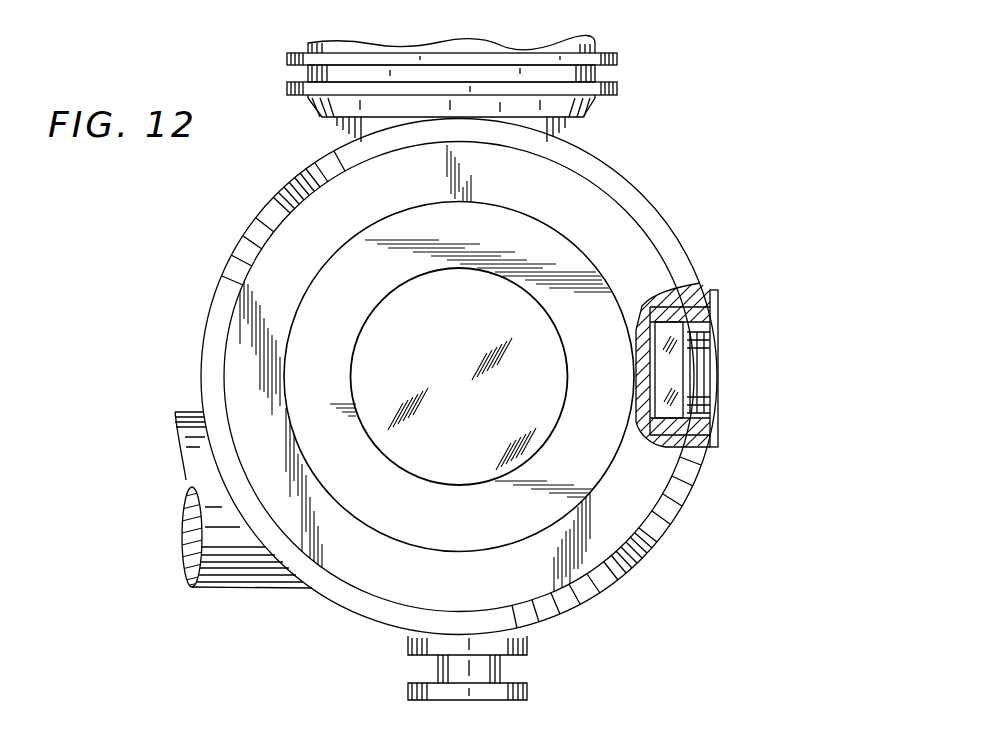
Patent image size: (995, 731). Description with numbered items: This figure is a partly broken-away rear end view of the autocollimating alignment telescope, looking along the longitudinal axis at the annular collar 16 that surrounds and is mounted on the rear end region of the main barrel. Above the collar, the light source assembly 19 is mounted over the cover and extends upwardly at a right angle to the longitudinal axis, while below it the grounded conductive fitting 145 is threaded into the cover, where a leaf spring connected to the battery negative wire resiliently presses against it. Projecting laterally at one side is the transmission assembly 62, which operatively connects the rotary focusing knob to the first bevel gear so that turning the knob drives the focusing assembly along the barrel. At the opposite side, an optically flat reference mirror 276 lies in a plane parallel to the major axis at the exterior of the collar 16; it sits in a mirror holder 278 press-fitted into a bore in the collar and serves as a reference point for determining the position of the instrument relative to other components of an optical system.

The annular collar 16 is at (657, 222).
The light source assembly 19 is at (603, 74).
The transmission assembly 62 is at (190, 412).
The grounded conductive fitting 145 is at (490, 668).
The optically flat reference mirror 276 is at (672, 367).
The mirror holder 278 is at (718, 425).